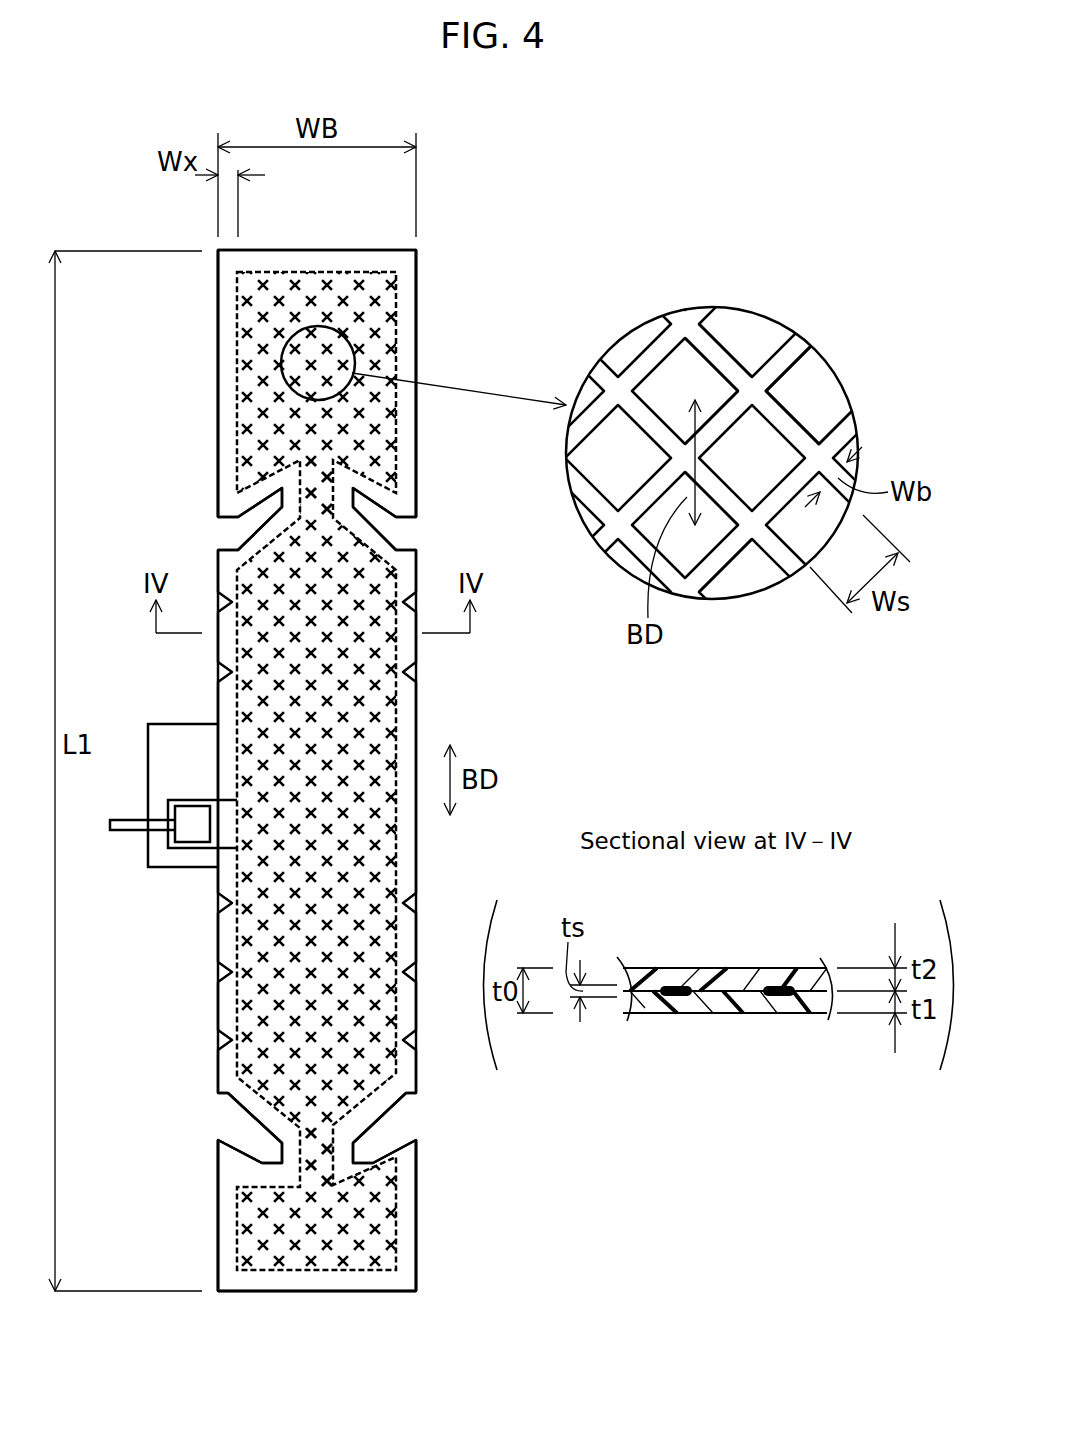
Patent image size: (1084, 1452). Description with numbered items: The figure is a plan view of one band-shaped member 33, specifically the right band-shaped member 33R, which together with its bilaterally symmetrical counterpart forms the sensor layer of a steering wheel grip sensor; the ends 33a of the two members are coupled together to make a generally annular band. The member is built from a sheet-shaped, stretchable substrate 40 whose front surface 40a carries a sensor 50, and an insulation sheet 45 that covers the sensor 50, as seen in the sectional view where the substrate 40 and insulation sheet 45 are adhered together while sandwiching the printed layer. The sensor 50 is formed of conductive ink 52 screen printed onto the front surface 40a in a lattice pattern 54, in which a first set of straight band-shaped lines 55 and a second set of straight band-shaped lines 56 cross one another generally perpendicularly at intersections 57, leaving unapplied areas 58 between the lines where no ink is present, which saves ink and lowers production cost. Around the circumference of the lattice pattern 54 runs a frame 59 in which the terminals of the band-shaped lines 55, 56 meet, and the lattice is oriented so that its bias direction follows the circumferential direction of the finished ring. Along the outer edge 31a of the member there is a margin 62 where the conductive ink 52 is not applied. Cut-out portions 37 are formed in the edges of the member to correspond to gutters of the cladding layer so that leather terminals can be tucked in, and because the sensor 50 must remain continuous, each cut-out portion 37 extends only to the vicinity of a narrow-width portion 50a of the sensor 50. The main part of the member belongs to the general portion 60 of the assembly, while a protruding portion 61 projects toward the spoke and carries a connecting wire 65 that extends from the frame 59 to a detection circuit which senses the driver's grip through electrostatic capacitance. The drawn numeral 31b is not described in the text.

The outer edge 31a is at (218, 370).
The end edge of electrode body 31b is at (303, 250).
The band-shaped member 33 is at (420, 721).
The right band-shaped member 33R is at (435, 240).
The end 33a is at (317, 1293).
The cut-out portion 37 is at (250, 521).
The substrate 40 is at (800, 1013).
The front surface 40a is at (728, 1013).
The insulation sheet 45 is at (775, 980).
The sensor 50 is at (708, 935).
The narrow-width portion 50a is at (343, 478).
The conductive ink 52 is at (677, 986).
The lattice pattern 54 is at (380, 738).
The first set of straight band-shaped lines 55 is at (723, 335).
The second set of straight band-shaped lines 56 is at (782, 358).
The intersection 57 is at (687, 330).
The unapplied area 58 is at (813, 400).
The frame 59 is at (400, 298).
The general portion 60 is at (190, 563).
The protruding portion 61 is at (195, 748).
The margin 62 is at (228, 320).
The connecting wire 65 is at (133, 832).